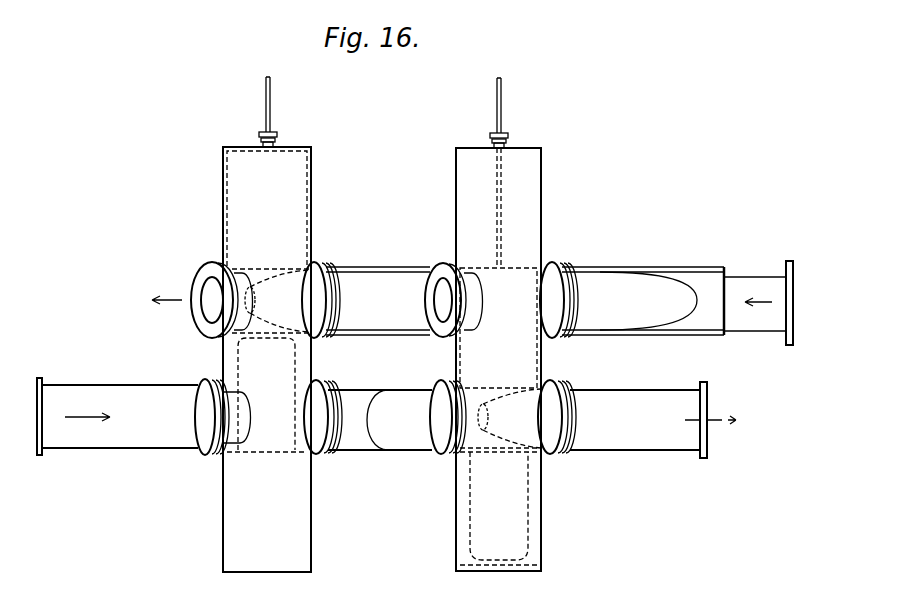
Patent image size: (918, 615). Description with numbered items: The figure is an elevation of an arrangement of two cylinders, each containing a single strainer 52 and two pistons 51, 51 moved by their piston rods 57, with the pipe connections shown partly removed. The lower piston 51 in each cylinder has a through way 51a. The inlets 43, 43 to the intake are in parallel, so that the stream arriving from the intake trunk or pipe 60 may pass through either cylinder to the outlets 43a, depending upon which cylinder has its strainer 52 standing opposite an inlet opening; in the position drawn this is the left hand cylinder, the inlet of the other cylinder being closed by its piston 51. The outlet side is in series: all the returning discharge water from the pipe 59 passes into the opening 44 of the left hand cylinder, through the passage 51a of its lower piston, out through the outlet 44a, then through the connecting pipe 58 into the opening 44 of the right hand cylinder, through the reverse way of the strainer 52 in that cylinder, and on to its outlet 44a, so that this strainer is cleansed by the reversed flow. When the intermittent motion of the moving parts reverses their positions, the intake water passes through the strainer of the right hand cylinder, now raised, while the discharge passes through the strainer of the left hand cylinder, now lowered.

The inlet 43 is at (322, 284).
The outlet 43a is at (443, 290).
The opening 44 is at (228, 449).
The outlet 44a is at (318, 440).
The piston 51 is at (550, 551).
The through way 51a is at (497, 578).
The strainer 52 is at (393, 359).
The piston rod 57 is at (271, 112).
The connecting pipe 58 is at (380, 420).
The pipe 59 is at (117, 416).
The intake trunk or pipe 60 is at (700, 282).